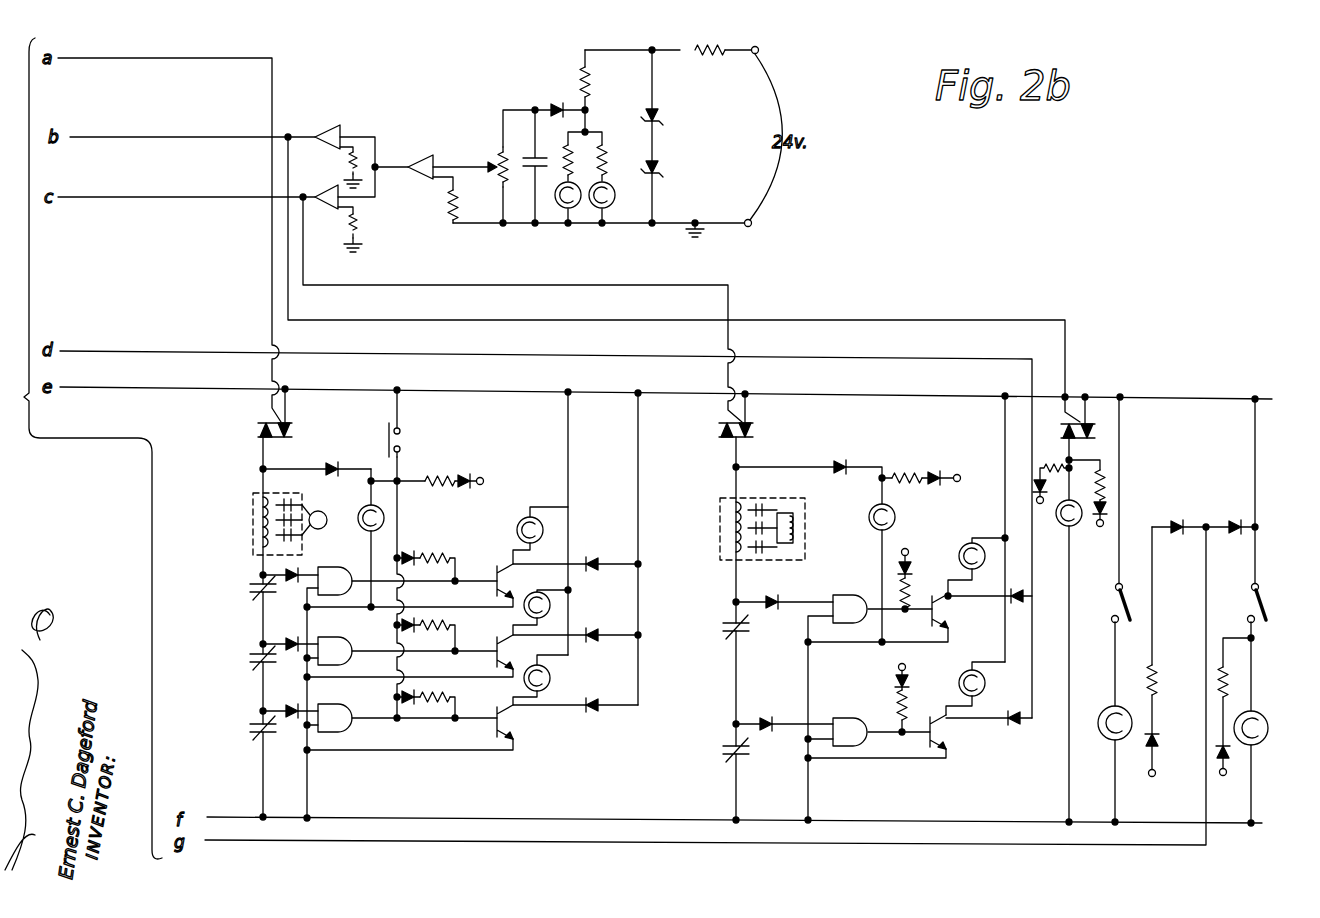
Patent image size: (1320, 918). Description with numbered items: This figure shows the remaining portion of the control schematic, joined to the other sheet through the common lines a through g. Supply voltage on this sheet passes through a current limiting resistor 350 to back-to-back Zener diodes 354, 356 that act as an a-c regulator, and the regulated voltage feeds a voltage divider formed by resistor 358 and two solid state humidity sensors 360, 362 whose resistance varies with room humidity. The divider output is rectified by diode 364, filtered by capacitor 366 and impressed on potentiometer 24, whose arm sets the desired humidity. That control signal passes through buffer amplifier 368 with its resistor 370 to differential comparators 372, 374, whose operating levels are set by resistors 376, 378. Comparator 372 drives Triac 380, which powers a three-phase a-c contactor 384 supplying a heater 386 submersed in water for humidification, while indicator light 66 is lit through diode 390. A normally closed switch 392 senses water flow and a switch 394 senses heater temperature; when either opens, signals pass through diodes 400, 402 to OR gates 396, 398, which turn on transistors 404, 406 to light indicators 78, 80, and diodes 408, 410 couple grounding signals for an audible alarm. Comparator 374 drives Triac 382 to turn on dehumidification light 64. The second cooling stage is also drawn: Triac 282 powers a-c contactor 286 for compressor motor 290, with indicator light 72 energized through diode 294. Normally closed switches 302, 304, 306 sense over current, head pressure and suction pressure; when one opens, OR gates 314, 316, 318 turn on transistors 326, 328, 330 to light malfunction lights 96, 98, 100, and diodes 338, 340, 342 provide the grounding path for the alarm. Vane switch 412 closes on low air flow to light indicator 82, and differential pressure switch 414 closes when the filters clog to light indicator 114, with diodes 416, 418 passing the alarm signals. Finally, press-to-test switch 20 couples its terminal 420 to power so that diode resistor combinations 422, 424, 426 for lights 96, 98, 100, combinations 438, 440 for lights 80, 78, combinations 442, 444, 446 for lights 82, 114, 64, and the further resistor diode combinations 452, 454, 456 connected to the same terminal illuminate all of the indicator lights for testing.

The press-to-test switch 20 is at (402, 430).
The potentiometer 24 is at (496, 152).
The dehumidification light 64 is at (1058, 525).
The indicator light 66 is at (897, 514).
The indicator light 72 is at (386, 516).
The indicator light 78 is at (986, 683).
The indicator light 80 is at (962, 550).
The indicator 82 is at (1100, 733).
The indicator light 96 is at (540, 541).
The indicator light 98 is at (551, 606).
The indicator light 100 is at (552, 676).
The indicator 114 is at (1275, 705).
The Triac 282 is at (290, 425).
The a-c contactor 286 is at (252, 552).
The compressor motor 290 is at (337, 502).
The diode 294 is at (338, 463).
The sensing switch 302 is at (253, 596).
The sensing switch 304 is at (253, 665).
The sensing switch 306 is at (253, 735).
The OR gate 314 is at (335, 581).
The OR gate 316 is at (335, 651).
The OR gate 318 is at (335, 718).
The transistor 326 is at (514, 581).
The transistor 328 is at (513, 652).
The transistor 330 is at (508, 722).
The diode 338 is at (596, 560).
The diode 340 is at (605, 628).
The diode 342 is at (610, 697).
The resistor 350 is at (705, 58).
The Zener diode 354 is at (660, 118).
The Zener diode 356 is at (660, 165).
The resistor 358 is at (590, 80).
The humidity sensor 360 is at (562, 208).
The humidity sensor 362 is at (596, 208).
The diode 364 is at (560, 103).
The capacitor 366 is at (533, 155).
The buffer amplifier 368 is at (415, 178).
The resistor 370 is at (452, 212).
The differential comparator 372 is at (328, 212).
The differential comparator 374 is at (325, 125).
The resistor 376 is at (358, 226).
The resistor 378 is at (348, 158).
The Triac 380 is at (755, 426).
The Triac 382 is at (1088, 415).
The a-c contactor 384 is at (765, 498).
The heater 386 is at (795, 520).
The diode 390 is at (835, 460).
The switch 392 is at (742, 636).
The switch 394 is at (740, 758).
The OR gate 396 is at (850, 609).
The OR gate 398 is at (850, 732).
The diode 400 is at (768, 596).
The diode 402 is at (766, 716).
The transistor 404 is at (961, 611).
The transistor 406 is at (938, 740).
The diode 408 is at (1020, 604).
The diode 410 is at (1014, 726).
The vane switch 412 is at (1130, 603).
The differential pressure switch 414 is at (1266, 603).
The diode 416 is at (1172, 520).
The diode 418 is at (1234, 520).
The terminal 420 is at (482, 476).
The diode resistor combination 422 is at (440, 553).
The diode resistor combination 424 is at (445, 622).
The diode resistor combination 426 is at (445, 693).
The diode resistor combination 438 is at (912, 595).
The diode resistor combination 440 is at (910, 710).
The diode resistor combination 442 is at (1158, 684).
The diode resistor combination 444 is at (1232, 688).
The diode resistor combination 446 is at (1103, 475).
The resistor 452 is at (440, 486).
The resistor 454 is at (910, 472).
The resistor 456 is at (1051, 469).